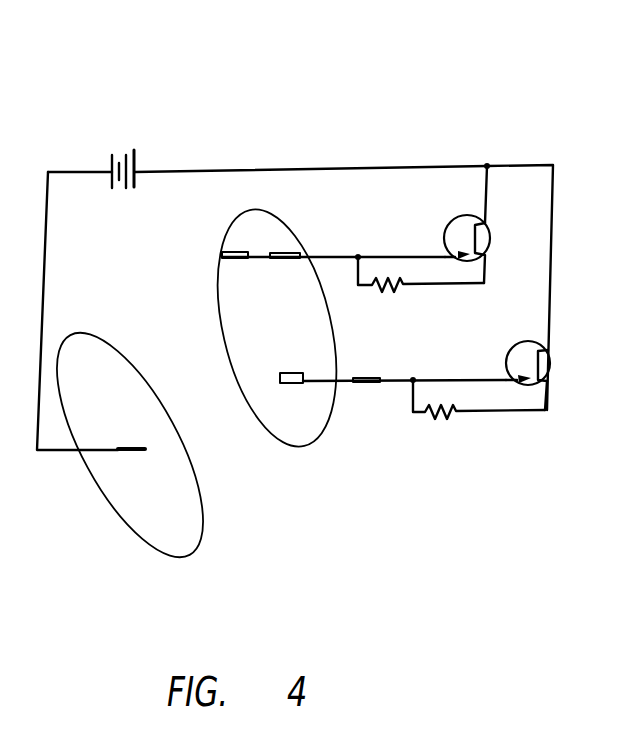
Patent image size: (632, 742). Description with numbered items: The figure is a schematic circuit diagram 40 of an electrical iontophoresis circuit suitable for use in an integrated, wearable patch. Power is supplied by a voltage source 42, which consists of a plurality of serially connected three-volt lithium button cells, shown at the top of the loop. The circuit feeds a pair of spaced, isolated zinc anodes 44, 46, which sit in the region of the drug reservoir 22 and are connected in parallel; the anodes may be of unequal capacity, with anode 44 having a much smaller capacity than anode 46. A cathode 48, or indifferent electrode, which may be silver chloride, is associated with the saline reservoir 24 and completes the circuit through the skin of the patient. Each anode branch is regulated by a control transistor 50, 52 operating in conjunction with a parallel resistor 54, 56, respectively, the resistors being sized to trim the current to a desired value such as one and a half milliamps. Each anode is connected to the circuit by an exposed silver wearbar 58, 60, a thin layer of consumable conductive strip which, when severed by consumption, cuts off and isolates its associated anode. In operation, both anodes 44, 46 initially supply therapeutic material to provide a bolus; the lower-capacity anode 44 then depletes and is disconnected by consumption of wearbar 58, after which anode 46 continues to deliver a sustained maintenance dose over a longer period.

The circuit diagram 40 is at (375, 95).
The voltage source 42 is at (134, 132).
The drug reservoir 22 is at (323, 432).
The saline reservoir 24 is at (189, 553).
The anode 44 is at (231, 250).
The anode 46 is at (290, 372).
The cathode 48 is at (135, 446).
The control transistor 50 is at (456, 222).
The control transistor 52 is at (517, 346).
The resistor 54 is at (390, 290).
The resistor 56 is at (432, 413).
The wearbar 58 is at (285, 251).
The wearbar 60 is at (366, 376).